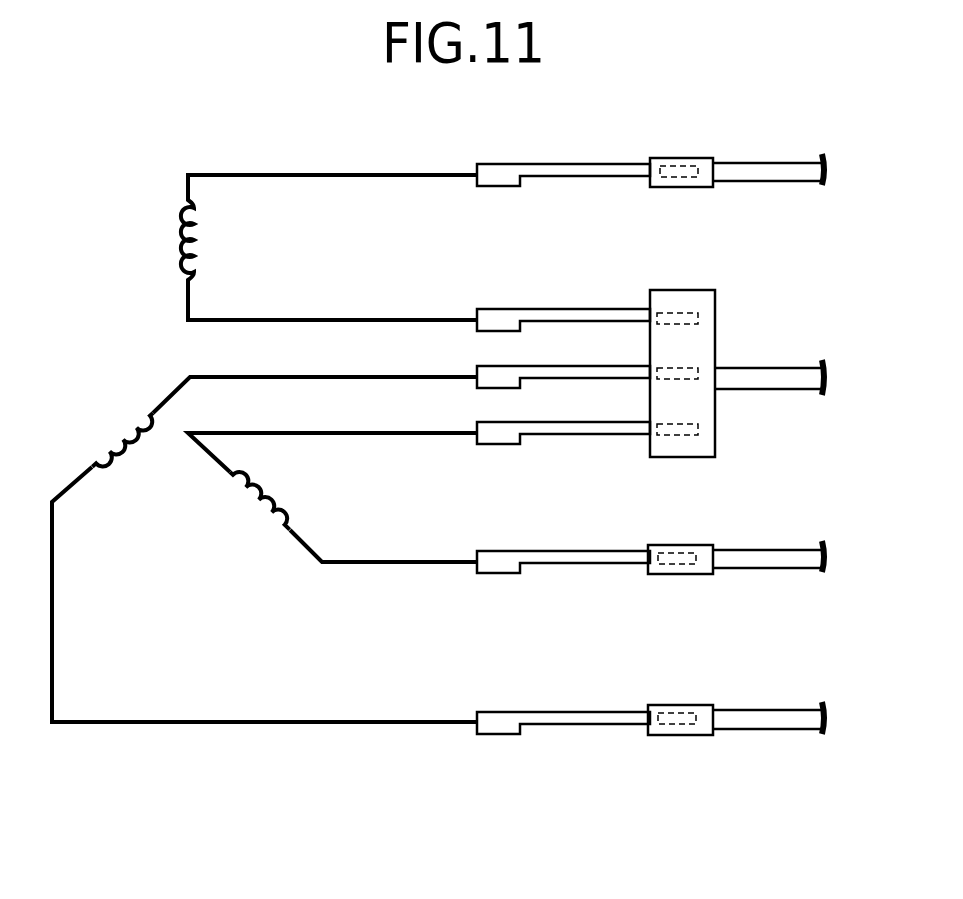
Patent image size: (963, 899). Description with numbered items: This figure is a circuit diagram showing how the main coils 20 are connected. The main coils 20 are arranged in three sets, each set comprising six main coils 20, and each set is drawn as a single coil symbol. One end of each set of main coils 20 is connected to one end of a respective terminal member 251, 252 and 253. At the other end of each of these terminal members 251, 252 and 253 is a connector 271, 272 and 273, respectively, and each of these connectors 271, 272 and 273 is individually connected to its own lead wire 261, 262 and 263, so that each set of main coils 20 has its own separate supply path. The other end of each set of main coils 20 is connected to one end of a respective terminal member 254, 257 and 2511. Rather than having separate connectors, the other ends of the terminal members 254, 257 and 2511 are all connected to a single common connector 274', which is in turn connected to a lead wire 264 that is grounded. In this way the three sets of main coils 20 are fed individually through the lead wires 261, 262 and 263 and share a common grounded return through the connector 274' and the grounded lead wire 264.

The main coil 20 is at (200, 240).
The terminal member 251 is at (560, 172).
The connector 271 is at (705, 145).
The lead wire 261 is at (765, 170).
The terminal member 254 is at (547, 310).
The connector 274' is at (689, 334).
The terminal member 2511 is at (540, 361).
The terminal member 257 is at (542, 433).
The lead wire 264 is at (785, 372).
The terminal member 252 is at (558, 562).
The connector 272 is at (680, 574).
The lead wire 262 is at (780, 571).
The terminal member 253 is at (577, 722).
The connector 273 is at (680, 737).
The lead wire 263 is at (780, 722).